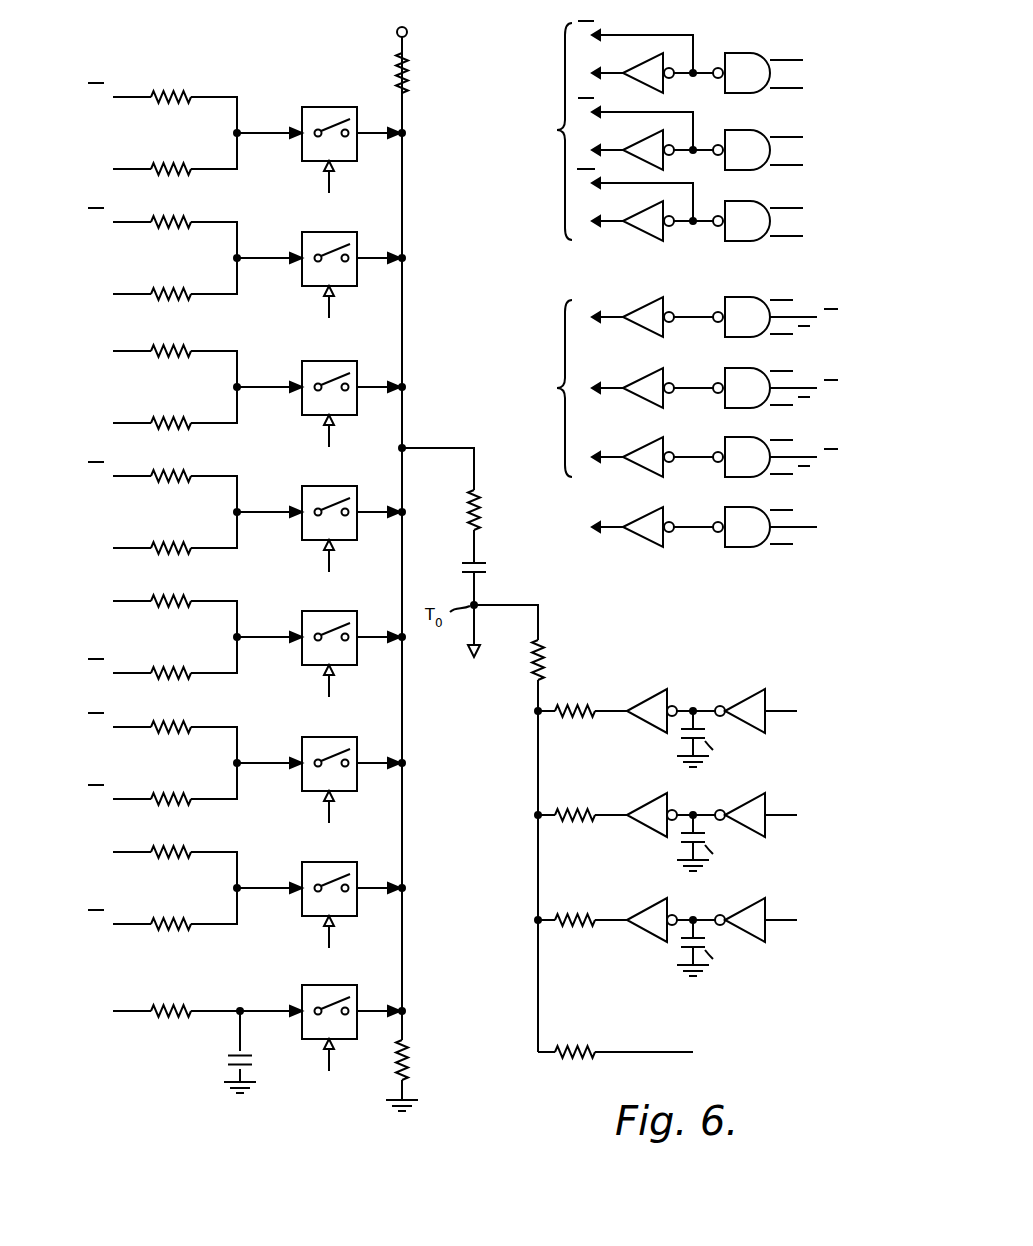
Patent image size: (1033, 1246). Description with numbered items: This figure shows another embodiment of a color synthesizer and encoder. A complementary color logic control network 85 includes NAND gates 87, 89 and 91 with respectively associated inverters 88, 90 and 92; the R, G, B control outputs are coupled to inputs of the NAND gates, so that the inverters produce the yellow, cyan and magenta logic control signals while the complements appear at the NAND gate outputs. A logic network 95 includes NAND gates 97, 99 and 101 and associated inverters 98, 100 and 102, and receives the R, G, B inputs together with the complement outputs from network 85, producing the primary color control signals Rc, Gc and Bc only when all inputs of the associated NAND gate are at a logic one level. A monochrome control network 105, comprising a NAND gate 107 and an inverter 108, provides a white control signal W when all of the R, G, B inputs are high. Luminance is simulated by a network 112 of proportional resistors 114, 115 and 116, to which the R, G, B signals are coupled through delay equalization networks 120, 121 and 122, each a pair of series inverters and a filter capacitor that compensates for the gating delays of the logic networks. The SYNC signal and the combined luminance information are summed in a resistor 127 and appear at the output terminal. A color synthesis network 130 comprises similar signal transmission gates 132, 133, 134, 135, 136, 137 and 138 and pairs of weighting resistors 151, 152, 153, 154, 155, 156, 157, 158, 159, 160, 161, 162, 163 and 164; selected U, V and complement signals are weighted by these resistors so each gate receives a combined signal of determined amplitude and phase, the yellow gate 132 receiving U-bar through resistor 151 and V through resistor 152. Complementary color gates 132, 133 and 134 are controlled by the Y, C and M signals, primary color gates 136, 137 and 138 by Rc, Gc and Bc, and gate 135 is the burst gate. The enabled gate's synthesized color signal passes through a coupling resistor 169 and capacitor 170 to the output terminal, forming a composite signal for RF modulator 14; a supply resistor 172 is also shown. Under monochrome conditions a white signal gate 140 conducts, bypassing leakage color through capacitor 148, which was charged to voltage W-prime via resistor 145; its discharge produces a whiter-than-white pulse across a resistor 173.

The color synthesis network 130 is at (250, 42).
The yellow signal gate 132 is at (306, 107).
The cyan signal gate 133 is at (312, 232).
The magenta signal gate 134 is at (312, 361).
The burst gate 135 is at (312, 486).
The red gate 136 is at (312, 611).
The green gate 137 is at (312, 737).
The blue gate 138 is at (312, 862).
The white signal gate 140 is at (312, 985).
The resistor 145 is at (170, 1018).
The capacitor 148 is at (272, 1058).
The weighting resistor 151 is at (176, 92).
The weighting resistor 152 is at (171, 176).
The weighting resistor 153 is at (176, 217).
The weighting resistor 154 is at (171, 305).
The weighting resistor 155 is at (176, 346).
The weighting resistor 156 is at (171, 430).
The weighting resistor 157 is at (176, 471).
The weighting resistor 158 is at (171, 555).
The weighting resistor 159 is at (176, 596).
The weighting resistor 160 is at (171, 680).
The weighting resistor 161 is at (176, 722).
The weighting resistor 162 is at (171, 806).
The weighting resistor 163 is at (176, 847).
The weighting resistor 164 is at (178, 930).
The coupling resistor 169 is at (478, 512).
The coupling capacitor 170 is at (487, 569).
The pull-up resistor 172 is at (420, 73).
The resistor 173 is at (412, 1062).
The resistor 127 is at (539, 646).
The RF modulator 14 is at (475, 668).
The luminance simulating network 112 is at (603, 783).
The proportional resistor 114 is at (562, 705).
The proportional resistor 115 is at (580, 809).
The proportional resistor 116 is at (578, 914).
The delay equalization network 120 is at (713, 696).
The delay equalization network 121 is at (713, 800).
The delay equalization network 122 is at (713, 905).
The complementary color logic control network 85 is at (678, 139).
The NAND gate 87 is at (730, 55).
The inverter 88 is at (645, 64).
The NAND gate 89 is at (735, 130).
The inverter 90 is at (645, 140).
The NAND gate 91 is at (735, 201).
The inverter 92 is at (650, 235).
The logic network 95 is at (563, 388).
The NAND gate 97 is at (735, 297).
The inverter 98 is at (645, 301).
The NAND gate 99 is at (735, 368).
The inverter 100 is at (645, 368).
The NAND gate 101 is at (735, 437).
The inverter 102 is at (645, 436).
The monochrome control network 105 is at (713, 585).
The NAND gate 107 is at (735, 507).
The inverter 108 is at (645, 505).